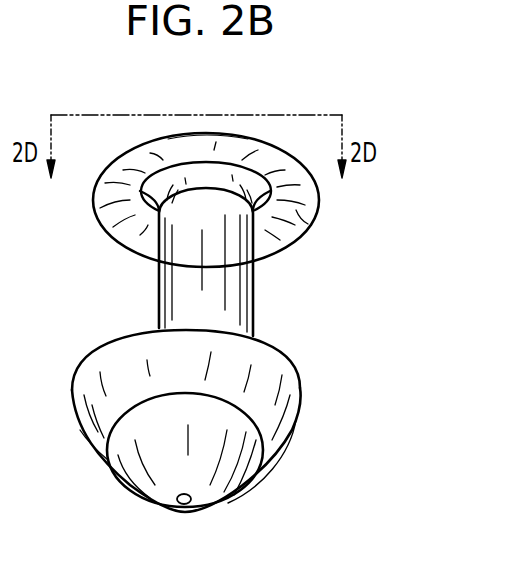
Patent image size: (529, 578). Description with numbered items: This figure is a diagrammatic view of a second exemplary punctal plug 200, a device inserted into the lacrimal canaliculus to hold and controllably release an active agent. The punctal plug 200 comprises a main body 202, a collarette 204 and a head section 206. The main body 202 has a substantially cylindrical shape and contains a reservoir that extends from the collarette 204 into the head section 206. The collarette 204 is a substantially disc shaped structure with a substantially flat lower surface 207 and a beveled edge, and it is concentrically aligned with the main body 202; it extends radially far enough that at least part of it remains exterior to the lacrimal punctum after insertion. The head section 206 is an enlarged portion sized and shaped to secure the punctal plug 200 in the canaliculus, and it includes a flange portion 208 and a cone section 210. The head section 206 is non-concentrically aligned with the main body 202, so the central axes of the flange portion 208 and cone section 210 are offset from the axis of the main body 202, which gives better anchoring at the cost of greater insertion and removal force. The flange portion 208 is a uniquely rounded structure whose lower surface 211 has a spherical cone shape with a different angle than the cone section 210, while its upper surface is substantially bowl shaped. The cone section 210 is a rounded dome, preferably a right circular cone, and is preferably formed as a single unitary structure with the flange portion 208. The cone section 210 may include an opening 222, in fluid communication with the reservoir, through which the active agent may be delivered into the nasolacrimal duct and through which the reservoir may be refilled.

The punctal plug 200 is at (313, 330).
The main body 202 is at (158, 293).
The collarette 204 is at (125, 162).
The head section 206 is at (323, 510).
The lower surface 207 is at (304, 218).
The flange portion 208 is at (80, 386).
The cone section 210 is at (122, 475).
The lower surface 211 is at (98, 405).
The opening 222 is at (186, 505).